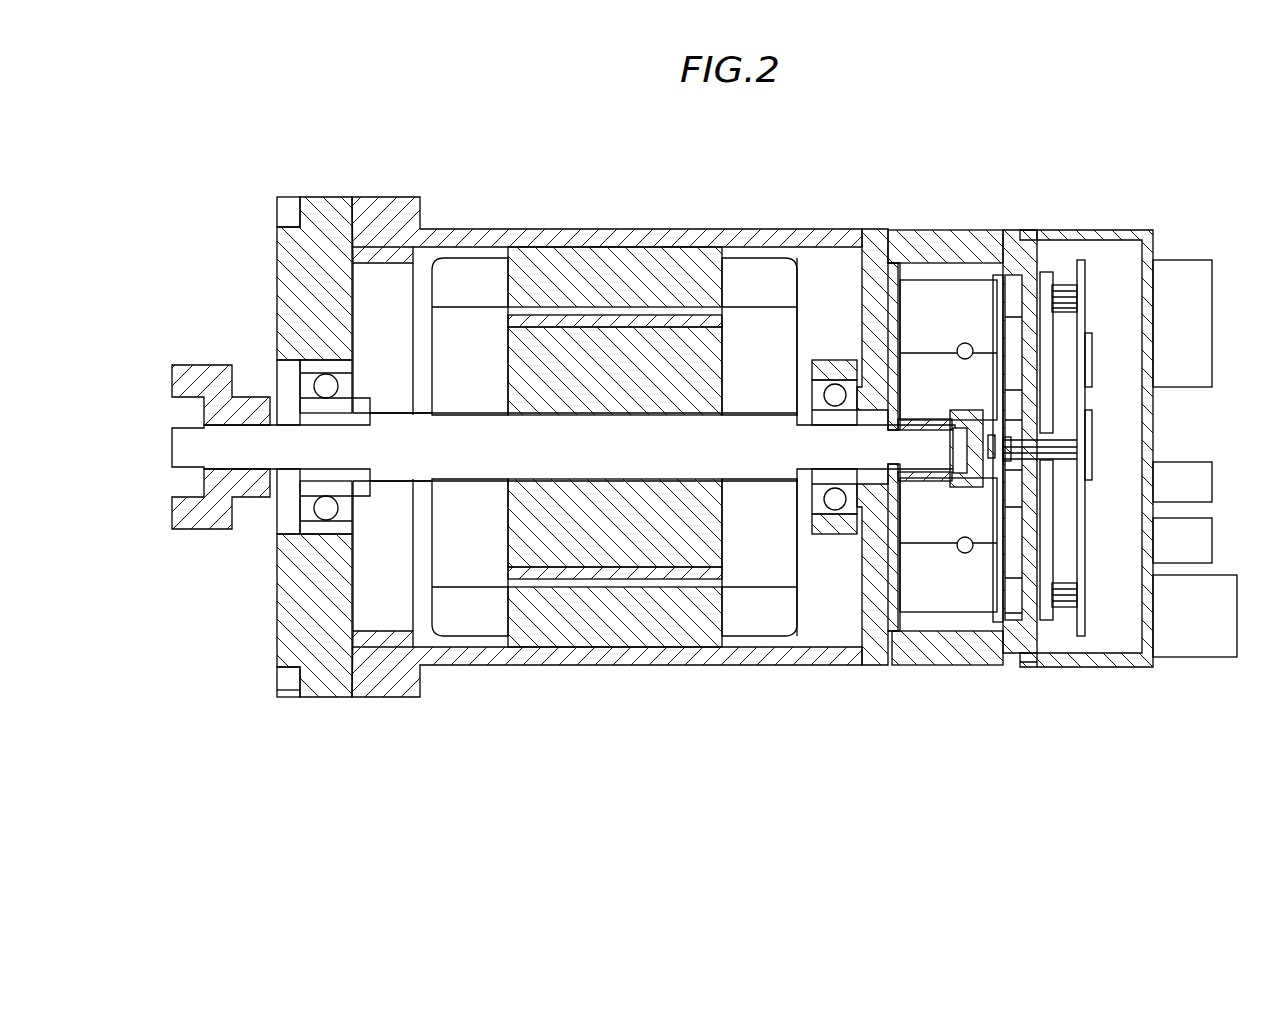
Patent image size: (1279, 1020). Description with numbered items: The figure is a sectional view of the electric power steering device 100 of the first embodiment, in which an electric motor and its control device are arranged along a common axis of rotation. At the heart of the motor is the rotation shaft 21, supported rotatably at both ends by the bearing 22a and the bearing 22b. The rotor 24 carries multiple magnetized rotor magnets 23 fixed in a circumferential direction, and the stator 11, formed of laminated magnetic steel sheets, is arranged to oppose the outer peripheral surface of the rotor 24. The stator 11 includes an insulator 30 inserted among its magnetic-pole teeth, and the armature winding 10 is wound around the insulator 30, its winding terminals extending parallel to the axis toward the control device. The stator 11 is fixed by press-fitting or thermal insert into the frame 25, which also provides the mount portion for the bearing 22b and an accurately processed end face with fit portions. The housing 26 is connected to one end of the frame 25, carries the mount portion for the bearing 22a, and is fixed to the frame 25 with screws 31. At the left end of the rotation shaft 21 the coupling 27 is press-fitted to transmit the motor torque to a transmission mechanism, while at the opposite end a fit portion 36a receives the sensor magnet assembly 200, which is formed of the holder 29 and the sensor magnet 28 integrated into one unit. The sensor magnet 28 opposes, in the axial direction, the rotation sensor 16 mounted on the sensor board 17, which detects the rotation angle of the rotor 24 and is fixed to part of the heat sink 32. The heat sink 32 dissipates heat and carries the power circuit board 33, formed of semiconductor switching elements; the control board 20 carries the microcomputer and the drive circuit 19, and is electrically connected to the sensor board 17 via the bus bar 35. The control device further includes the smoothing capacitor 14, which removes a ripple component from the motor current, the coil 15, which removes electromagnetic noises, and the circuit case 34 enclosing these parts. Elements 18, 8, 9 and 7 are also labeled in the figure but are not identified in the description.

The electric power steering device 100 is at (703, 843).
The sensor magnet assembly 200 is at (972, 790).
The coupling 27 is at (205, 365).
The housing 26 is at (300, 270).
The screws 31 is at (292, 683).
The bearing 22a is at (320, 365).
The frame 25 is at (452, 243).
The rotor magnets 23 is at (624, 320).
The rotor 24 is at (558, 350).
The stator 11 is at (620, 630).
The armature winding 10 is at (723, 636).
The insulator 30 is at (766, 608).
The bearing 22b is at (835, 383).
The rotation shaft 21 is at (870, 435).
The fit portion 36a is at (927, 440).
The smoothing capacitor 14 is at (928, 595).
The holder 29 is at (948, 490).
The sensor magnet 28 is at (973, 500).
The rotation sensor 16 is at (992, 435).
The sensor board 17 is at (1000, 268).
The heat sink 32 is at (997, 632).
The power circuit board 33 is at (1047, 605).
The bus bar 35 is at (1060, 458).
The control board 20 is at (1073, 285).
The drive circuit 19 is at (1090, 352).
The electronic component 18 is at (1090, 450).
The circuit case 34 is at (1147, 232).
The coil 15 is at (1190, 278).
The connector 8 is at (1192, 470).
The connector 9 is at (1192, 528).
The power supply connector 7 is at (1192, 608).